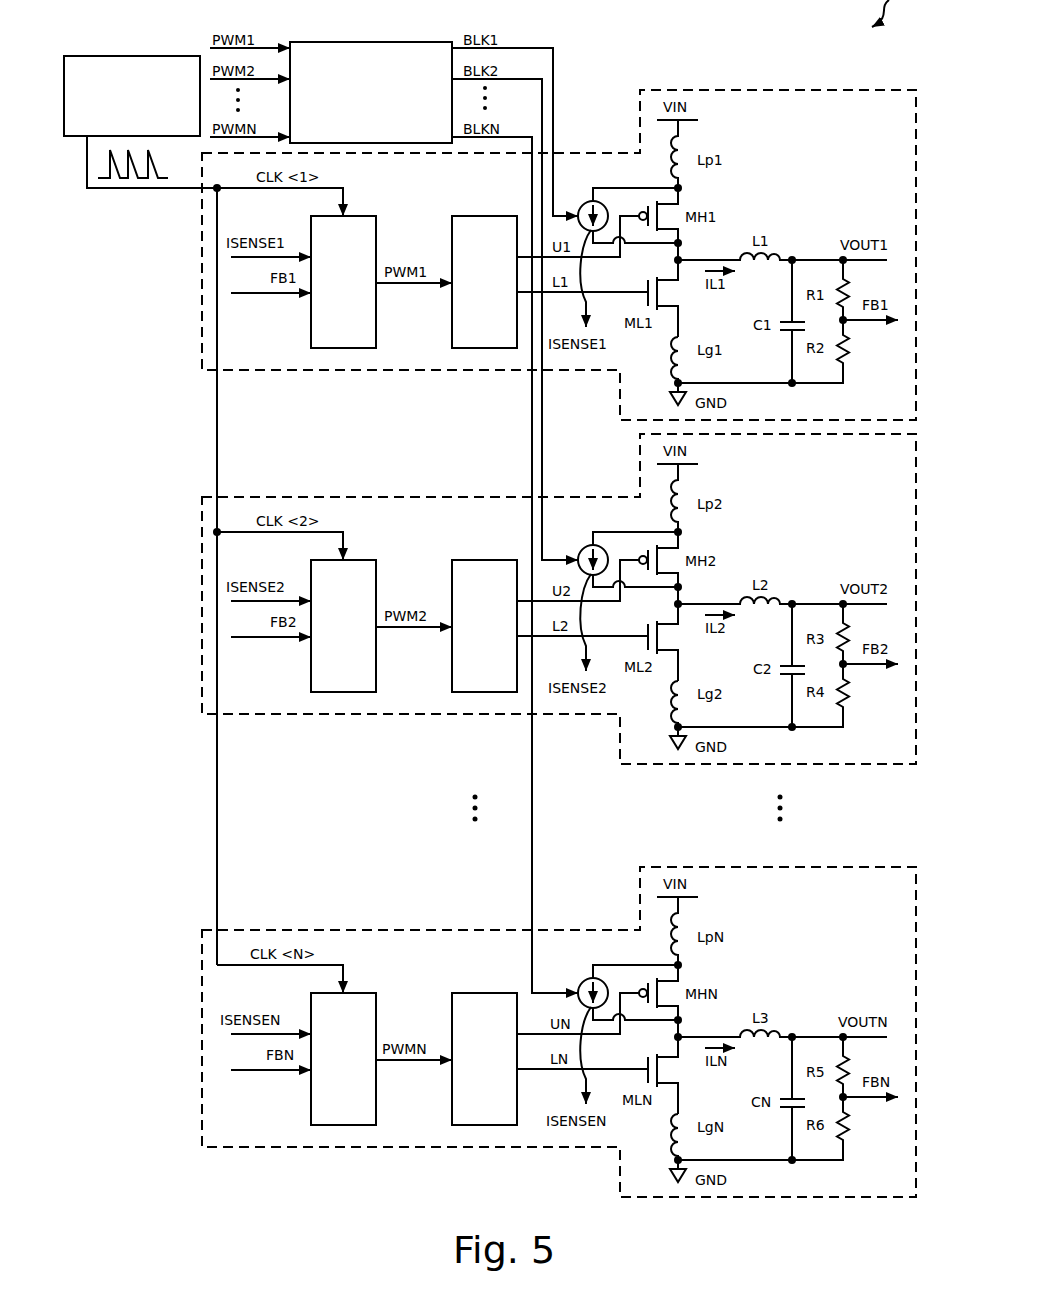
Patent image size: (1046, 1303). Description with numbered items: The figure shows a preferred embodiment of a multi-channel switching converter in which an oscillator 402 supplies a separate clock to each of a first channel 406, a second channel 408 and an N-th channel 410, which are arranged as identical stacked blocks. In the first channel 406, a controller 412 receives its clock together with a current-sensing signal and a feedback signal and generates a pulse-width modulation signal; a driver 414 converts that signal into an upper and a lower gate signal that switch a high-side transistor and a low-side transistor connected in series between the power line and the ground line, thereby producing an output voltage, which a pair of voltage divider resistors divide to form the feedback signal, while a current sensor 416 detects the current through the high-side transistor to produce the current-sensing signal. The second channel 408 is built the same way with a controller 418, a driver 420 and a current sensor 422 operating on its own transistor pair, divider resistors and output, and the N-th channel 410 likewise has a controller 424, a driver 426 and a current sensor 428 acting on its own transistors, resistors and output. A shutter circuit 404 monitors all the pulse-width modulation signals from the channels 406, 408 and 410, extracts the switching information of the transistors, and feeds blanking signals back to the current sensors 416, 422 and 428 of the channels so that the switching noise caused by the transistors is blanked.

The oscillator 402 is at (136, 56).
The shutter circuit 404 is at (370, 42).
The channel 406 is at (410, 371).
The channel 408 is at (559, 599).
The N-th channel 410 is at (559, 1032).
The controller 412 is at (378, 311).
The driver 414 is at (480, 216).
The current sensor 416 is at (581, 206).
The controller 418 is at (374, 626).
The driver 420 is at (484, 603).
The current sensor 422 is at (607, 541).
The controller 424 is at (374, 1059).
The driver 426 is at (484, 1036).
The current sensor 428 is at (607, 974).